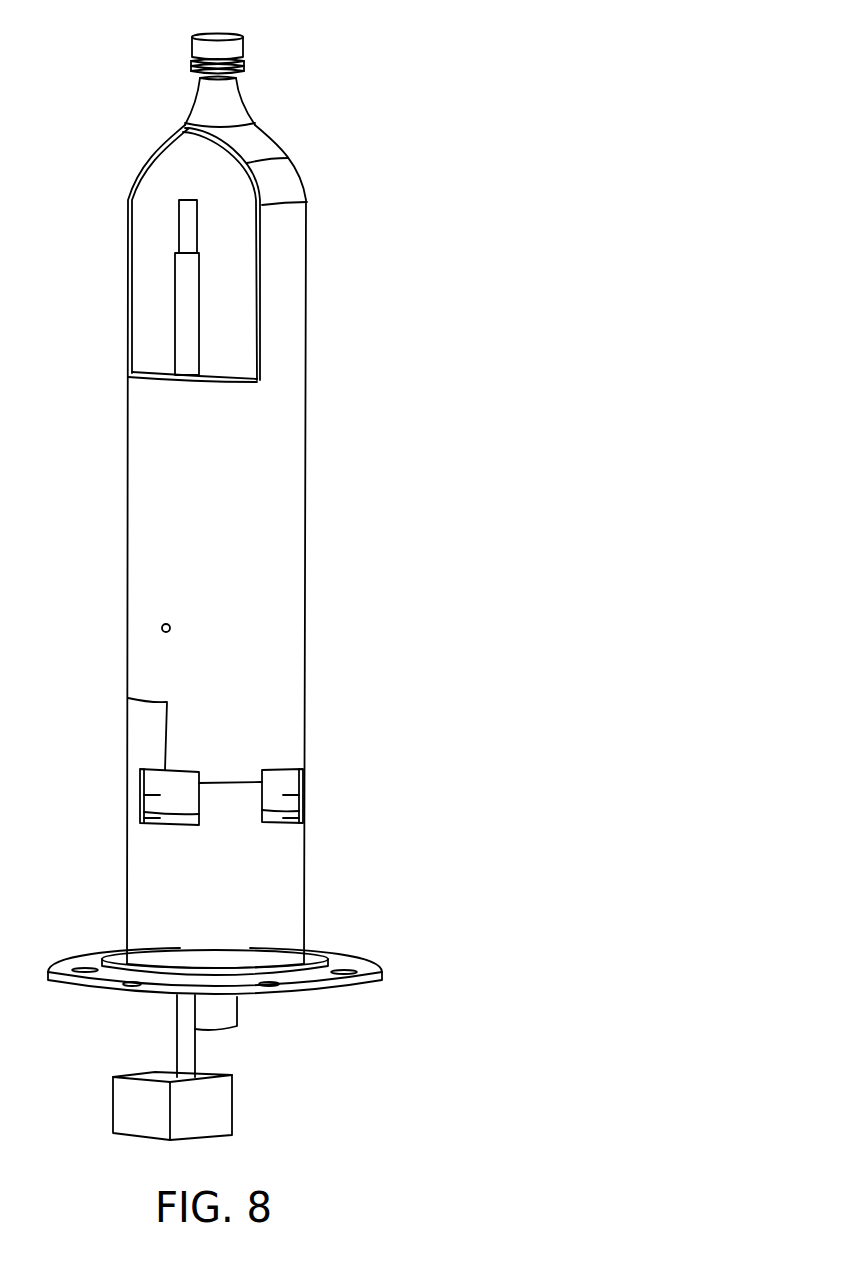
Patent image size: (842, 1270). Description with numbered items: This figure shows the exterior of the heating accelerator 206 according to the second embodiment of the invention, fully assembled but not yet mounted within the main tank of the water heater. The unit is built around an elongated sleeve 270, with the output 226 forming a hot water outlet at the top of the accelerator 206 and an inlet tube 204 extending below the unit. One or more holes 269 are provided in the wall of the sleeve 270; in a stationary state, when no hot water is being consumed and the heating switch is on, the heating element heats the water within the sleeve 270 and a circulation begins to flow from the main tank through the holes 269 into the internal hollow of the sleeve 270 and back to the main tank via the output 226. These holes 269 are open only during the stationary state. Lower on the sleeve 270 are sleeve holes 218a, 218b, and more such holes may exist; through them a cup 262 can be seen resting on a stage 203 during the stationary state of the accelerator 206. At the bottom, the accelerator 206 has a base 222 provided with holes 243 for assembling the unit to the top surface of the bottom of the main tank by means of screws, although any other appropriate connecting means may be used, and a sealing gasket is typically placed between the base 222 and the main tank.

The accelerator 206 is at (447, 99).
The sleeve 270 is at (293, 640).
The output 226 is at (200, 47).
The holes 269 is at (160, 630).
The sleeve hole 218a is at (158, 782).
The sleeve hole 218b is at (290, 780).
The cup 262 is at (155, 795).
The stage 203 is at (137, 817).
The base 222 is at (62, 970).
The holes 243 is at (345, 972).
The inlet tube 204 is at (227, 1018).